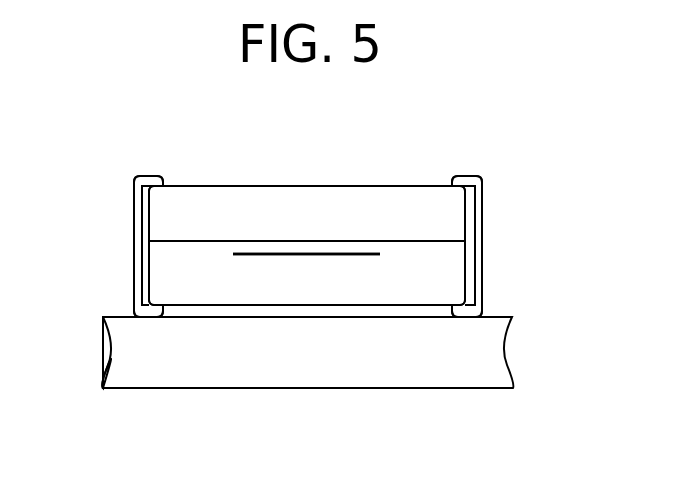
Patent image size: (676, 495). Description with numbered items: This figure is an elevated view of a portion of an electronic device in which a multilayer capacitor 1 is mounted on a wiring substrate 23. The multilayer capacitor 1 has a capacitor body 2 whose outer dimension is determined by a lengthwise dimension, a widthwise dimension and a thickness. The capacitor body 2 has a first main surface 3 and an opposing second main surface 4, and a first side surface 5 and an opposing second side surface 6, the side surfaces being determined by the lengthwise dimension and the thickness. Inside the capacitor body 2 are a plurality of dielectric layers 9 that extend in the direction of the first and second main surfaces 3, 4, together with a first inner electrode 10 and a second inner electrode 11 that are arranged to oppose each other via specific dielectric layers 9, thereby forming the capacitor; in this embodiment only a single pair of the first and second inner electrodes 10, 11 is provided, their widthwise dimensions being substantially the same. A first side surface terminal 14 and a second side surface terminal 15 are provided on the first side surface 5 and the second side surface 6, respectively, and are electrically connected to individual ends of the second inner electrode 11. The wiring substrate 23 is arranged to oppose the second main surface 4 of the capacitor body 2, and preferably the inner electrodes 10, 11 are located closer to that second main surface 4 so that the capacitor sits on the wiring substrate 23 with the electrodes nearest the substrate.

The multilayer capacitor 1 is at (240, 161).
The capacitor body 2 is at (381, 175).
The first main surface 3 is at (315, 186).
The second inner electrode 11 is at (219, 241).
The dielectric layers 9 is at (343, 248).
The first inner electrode 10 is at (258, 254).
The second main surface 4 is at (292, 317).
The wiring substrate 23 is at (435, 388).
The first side surface 5 is at (150, 215).
The first side surface terminal 14 is at (140, 266).
The second side surface terminal 15 is at (473, 203).
The second side surface 6 is at (468, 263).